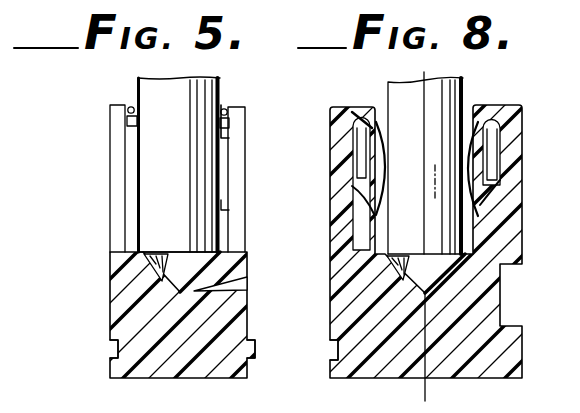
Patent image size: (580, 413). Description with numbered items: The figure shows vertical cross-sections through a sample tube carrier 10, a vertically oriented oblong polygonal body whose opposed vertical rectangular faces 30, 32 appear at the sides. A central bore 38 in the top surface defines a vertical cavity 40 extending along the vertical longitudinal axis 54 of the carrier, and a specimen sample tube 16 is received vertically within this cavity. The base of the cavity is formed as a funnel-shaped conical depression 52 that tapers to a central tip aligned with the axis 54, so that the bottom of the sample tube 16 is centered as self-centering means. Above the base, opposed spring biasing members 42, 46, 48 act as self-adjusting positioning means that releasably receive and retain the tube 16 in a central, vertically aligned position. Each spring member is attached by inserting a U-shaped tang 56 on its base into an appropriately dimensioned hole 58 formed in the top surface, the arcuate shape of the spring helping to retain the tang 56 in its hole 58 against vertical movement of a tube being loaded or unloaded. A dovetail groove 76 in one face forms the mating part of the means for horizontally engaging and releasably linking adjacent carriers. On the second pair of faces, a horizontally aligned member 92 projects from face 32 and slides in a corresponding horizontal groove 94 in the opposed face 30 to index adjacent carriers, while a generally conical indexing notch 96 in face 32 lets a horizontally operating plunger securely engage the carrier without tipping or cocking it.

In FIG. 5, the sample tube carrier 10 is at (96, 248).
In FIG. 8, the sample tube carrier 10 is at (329, 248).
In FIG. 5, the sample tube 16 is at (222, 86).
In FIG. 8, the sample tube 16 is at (466, 86).
In FIG. 5, the vertical rectangular face 30 is at (110, 300).
In FIG. 5, the vertical rectangular face 32 is at (248, 332).
In FIG. 8, the central bore 38 is at (372, 105).
In FIG. 5, the vertical cavity 40 is at (229, 205).
In FIG. 8, the spring biasing member 42 is at (476, 200).
In FIG. 5, the spring biasing member 46 is at (128, 134).
In FIG. 8, the spring biasing member 46 is at (380, 119).
In FIG. 5, the spring biasing member 48 is at (230, 140).
In FIG. 5, the conical depression 52 is at (174, 256).
In FIG. 8, the conical depression 52 is at (418, 257).
In FIG. 8, the vertical longitudinal axis 54 is at (428, 399).
In FIG. 8, the U-shaped tang 56 is at (352, 183).
In FIG. 5, the hole 58 is at (130, 104).
In FIG. 8, the hole 58 is at (362, 112).
In FIG. 8, the dovetail groove 76 is at (502, 287).
In FIG. 5, the horizontally aligned member 92 is at (255, 360).
In FIG. 5, the horizontal groove 94 is at (110, 343).
In FIG. 8, the horizontal groove 94 is at (332, 343).
In FIG. 5, the indexing notch 96 is at (232, 290).